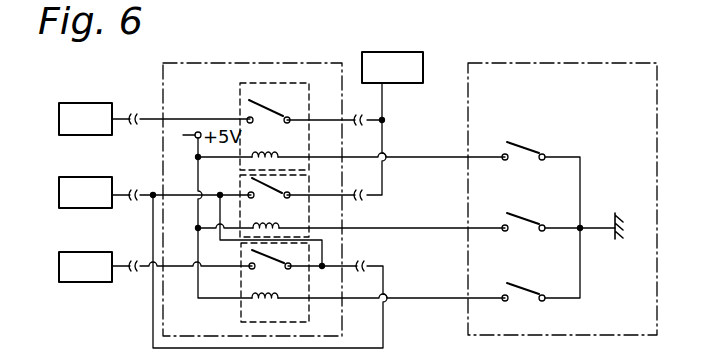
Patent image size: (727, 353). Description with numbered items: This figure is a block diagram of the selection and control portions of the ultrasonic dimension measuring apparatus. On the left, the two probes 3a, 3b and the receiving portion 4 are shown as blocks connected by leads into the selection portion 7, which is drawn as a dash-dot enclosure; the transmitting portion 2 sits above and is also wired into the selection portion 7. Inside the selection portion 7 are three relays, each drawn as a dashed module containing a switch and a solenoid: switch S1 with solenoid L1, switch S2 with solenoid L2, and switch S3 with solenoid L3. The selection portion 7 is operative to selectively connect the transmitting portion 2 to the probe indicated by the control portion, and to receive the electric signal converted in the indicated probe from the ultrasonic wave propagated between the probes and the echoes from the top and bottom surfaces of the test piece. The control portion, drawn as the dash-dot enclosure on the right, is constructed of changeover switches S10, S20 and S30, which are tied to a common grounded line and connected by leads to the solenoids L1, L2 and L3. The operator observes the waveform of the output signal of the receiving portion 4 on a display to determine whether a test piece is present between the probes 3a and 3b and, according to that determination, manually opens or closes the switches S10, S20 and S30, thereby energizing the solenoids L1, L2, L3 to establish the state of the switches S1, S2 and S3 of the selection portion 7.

The selection portion 7 is at (163, 98).
The probe 3a is at (78, 102).
The receiving portion 4 is at (84, 176).
The probe 3b is at (86, 252).
The transmitting portion 2 is at (406, 85).
The switch S1 is at (250, 100).
The switch S2 is at (290, 198).
The switch S3 is at (267, 268).
The solenoid of a relay L1 is at (267, 138).
The solenoid of a relay L2 is at (265, 212).
The solenoid of a relay L3 is at (260, 295).
The switch S10 is at (516, 158).
The switch S20 is at (516, 229).
The switch S30 is at (516, 299).